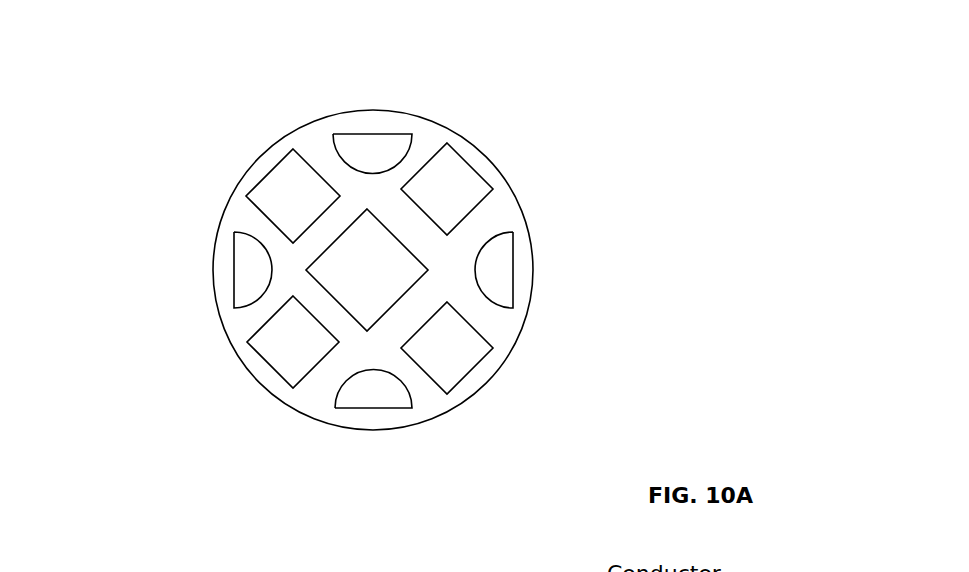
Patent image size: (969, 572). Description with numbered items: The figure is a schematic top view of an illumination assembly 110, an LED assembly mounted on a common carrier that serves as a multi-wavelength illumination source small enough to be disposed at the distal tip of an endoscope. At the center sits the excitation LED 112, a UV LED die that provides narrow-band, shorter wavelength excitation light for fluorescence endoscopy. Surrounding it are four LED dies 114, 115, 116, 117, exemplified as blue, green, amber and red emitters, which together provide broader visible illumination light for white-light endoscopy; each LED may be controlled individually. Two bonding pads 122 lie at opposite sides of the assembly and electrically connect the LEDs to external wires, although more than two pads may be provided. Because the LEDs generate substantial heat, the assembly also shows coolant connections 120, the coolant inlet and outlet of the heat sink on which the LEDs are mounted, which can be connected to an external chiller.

The illumination assembly 110 is at (97, 482).
The excitation LED 112 is at (366, 330).
The illumination LED die 114 is at (465, 373).
The illumination LED die 115 is at (481, 178).
The illumination LED die 116 is at (263, 173).
The illumination LED die 117 is at (267, 370).
The coolant connection 120 is at (423, 493).
The bonding pads 122 is at (610, 262).